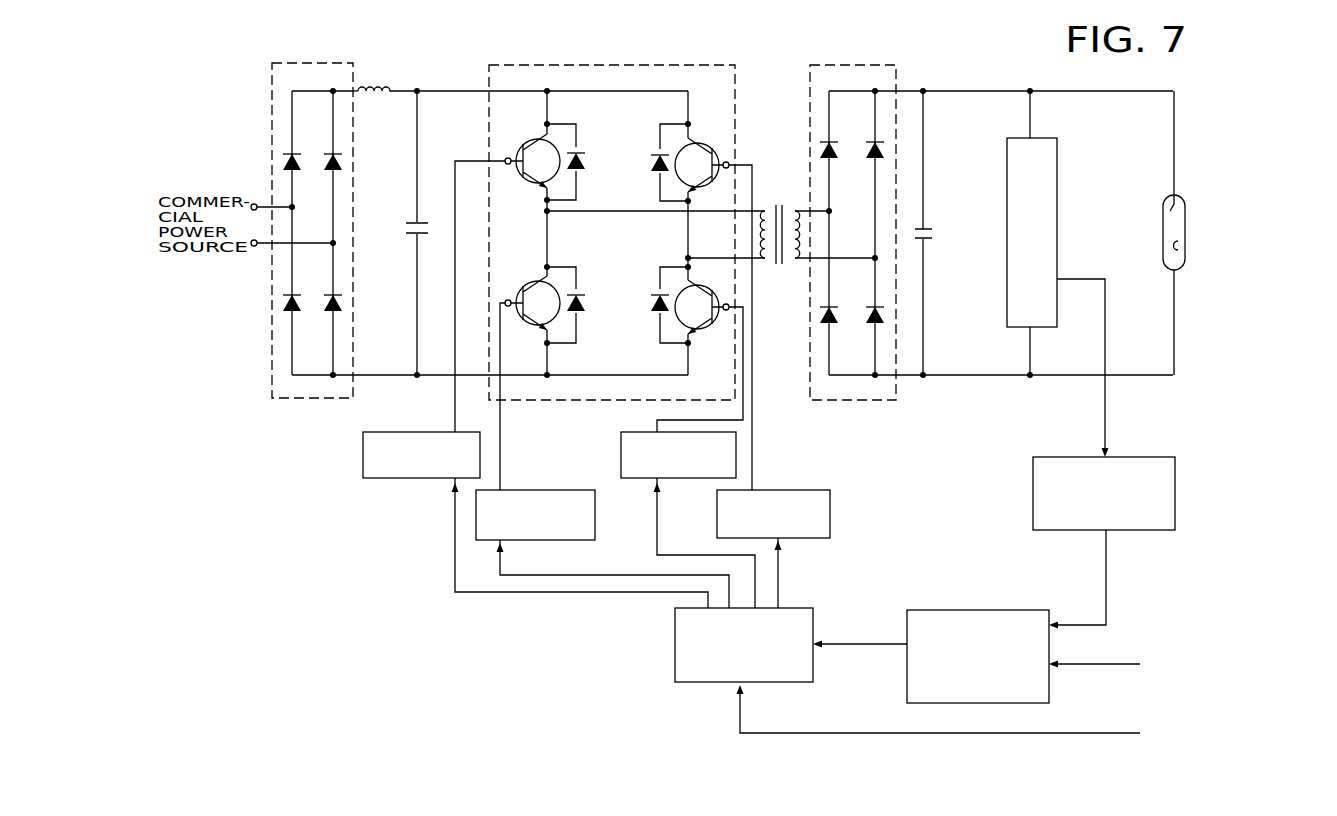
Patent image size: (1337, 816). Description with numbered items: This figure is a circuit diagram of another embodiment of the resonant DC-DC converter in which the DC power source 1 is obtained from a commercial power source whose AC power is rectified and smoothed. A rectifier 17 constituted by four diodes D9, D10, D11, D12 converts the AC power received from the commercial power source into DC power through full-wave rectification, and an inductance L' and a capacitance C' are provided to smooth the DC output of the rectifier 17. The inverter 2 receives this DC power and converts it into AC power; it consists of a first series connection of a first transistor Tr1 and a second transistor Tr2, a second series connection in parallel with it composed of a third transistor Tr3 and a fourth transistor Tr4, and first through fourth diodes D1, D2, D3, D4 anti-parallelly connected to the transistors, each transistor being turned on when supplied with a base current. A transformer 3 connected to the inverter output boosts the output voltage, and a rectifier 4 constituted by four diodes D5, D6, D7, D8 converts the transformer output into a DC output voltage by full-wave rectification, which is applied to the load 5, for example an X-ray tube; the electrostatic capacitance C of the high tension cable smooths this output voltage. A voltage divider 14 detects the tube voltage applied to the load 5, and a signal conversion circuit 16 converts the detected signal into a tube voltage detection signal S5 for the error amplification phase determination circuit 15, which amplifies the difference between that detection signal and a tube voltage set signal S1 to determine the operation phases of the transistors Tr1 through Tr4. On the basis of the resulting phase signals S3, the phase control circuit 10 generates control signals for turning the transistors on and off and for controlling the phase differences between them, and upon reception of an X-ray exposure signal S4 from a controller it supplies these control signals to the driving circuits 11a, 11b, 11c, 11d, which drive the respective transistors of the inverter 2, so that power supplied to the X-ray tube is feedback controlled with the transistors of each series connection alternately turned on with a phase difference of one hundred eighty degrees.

The rectifier 17 is at (308, 62).
The DC power source 1 is at (357, 52).
The inductance L' is at (387, 73).
The capacitance C' is at (402, 233).
The diode D9 is at (300, 156).
The diode D10 is at (328, 166).
The diode D11 is at (300, 296).
The diode D12 is at (328, 308).
The inverter 2 is at (689, 63).
The first transistor Tr1 is at (518, 146).
The second transistor Tr2 is at (518, 289).
The third transistor Tr3 is at (712, 148).
The fourth transistor Tr4 is at (712, 326).
The first diode D1 is at (582, 164).
The second diode D2 is at (582, 306).
The third diode D3 is at (654, 166).
The fourth diode D4 is at (654, 306).
The transformer 3 is at (780, 200).
The rectifier 4 is at (867, 63).
The diode D5 is at (838, 146).
The diode D6 is at (870, 156).
The diode D7 is at (838, 310).
The diode D8 is at (870, 320).
The electrostatic capacitance C is at (936, 233).
The voltage divider 14 is at (1057, 181).
The load 5 is at (1187, 238).
The driving circuit 11a is at (410, 478).
The driving circuit 11b is at (557, 490).
The driving circuit 11c is at (800, 490).
The driving circuit 11d is at (635, 478).
The phase control circuit 10 is at (675, 650).
The error amplification phase determination circuit 15 is at (968, 608).
The signal conversion circuit 16 is at (1157, 455).
The phase signal S3 is at (860, 632).
The tube voltage detection signal S5 is at (1077, 579).
The tube voltage set signal S1 is at (1170, 669).
The X-ray exposure signal S4 is at (1030, 721).